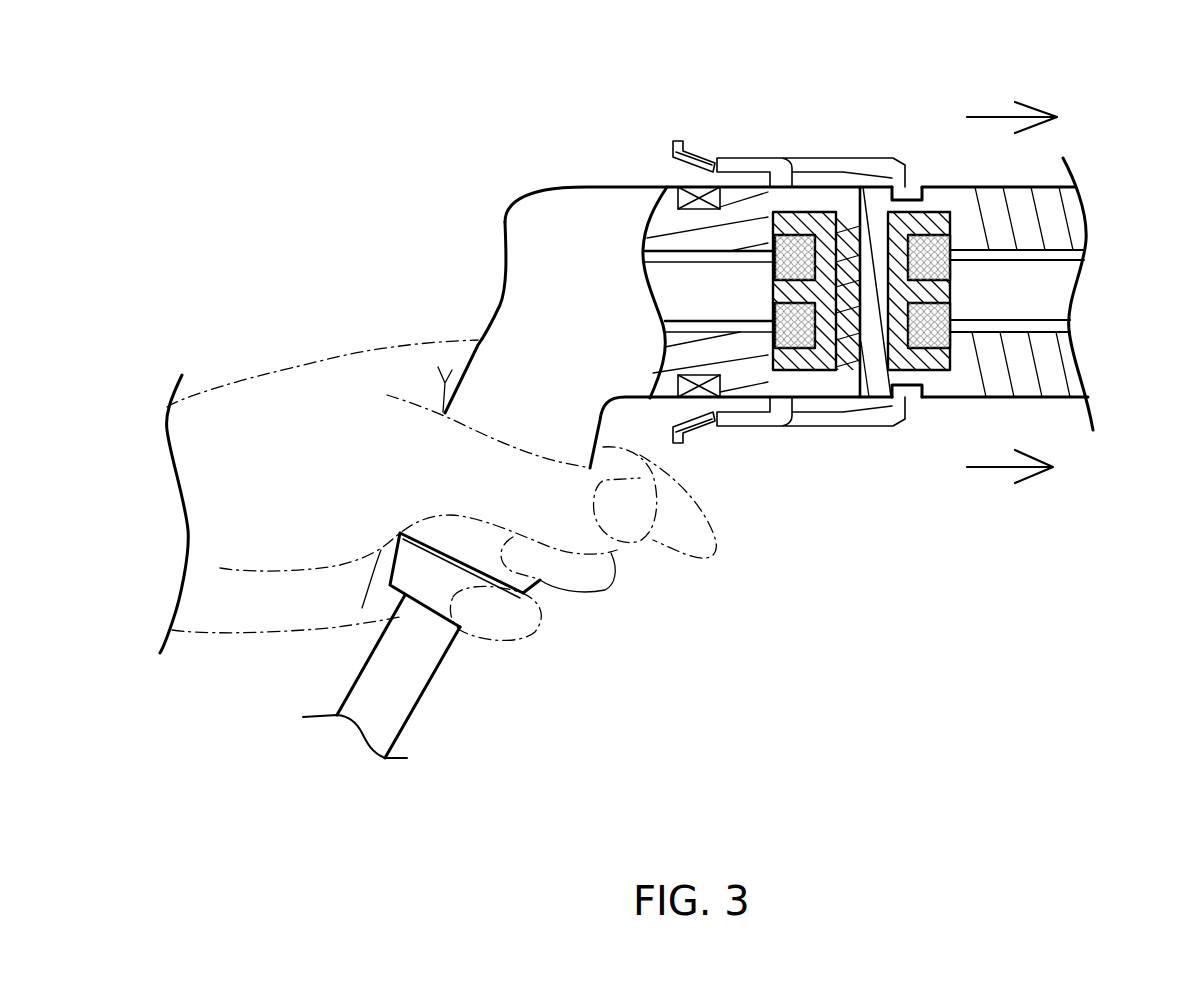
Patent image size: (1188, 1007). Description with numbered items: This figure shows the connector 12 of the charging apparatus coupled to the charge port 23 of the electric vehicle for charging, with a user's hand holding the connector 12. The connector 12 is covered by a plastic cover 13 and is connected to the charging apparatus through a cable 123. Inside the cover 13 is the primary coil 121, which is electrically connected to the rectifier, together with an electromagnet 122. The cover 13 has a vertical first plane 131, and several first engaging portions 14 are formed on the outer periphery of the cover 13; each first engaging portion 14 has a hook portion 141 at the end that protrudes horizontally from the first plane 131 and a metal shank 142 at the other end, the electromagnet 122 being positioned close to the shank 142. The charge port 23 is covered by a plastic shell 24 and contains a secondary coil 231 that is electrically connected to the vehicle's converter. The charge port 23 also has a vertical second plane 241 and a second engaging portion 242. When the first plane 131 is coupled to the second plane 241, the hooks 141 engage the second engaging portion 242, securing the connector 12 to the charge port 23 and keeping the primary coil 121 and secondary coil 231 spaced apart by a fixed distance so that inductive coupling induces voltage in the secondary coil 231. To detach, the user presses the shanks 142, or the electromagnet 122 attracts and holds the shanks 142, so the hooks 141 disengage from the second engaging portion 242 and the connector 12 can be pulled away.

The connector 12 is at (495, 266).
The primary coil 121 is at (803, 360).
The electromagnet 122 is at (688, 187).
The cable 123 is at (427, 690).
The cover 13 is at (800, 349).
The first plane 131 is at (867, 385).
The first engaging portion 14 is at (771, 158).
The hook portion 141 is at (897, 200).
The shank 142 is at (695, 150).
The charge port 23 is at (1025, 170).
The secondary coil 231 is at (921, 267).
The shell 24 is at (912, 321).
The second plane 241 is at (866, 217).
The second engaging portion 242 is at (912, 388).